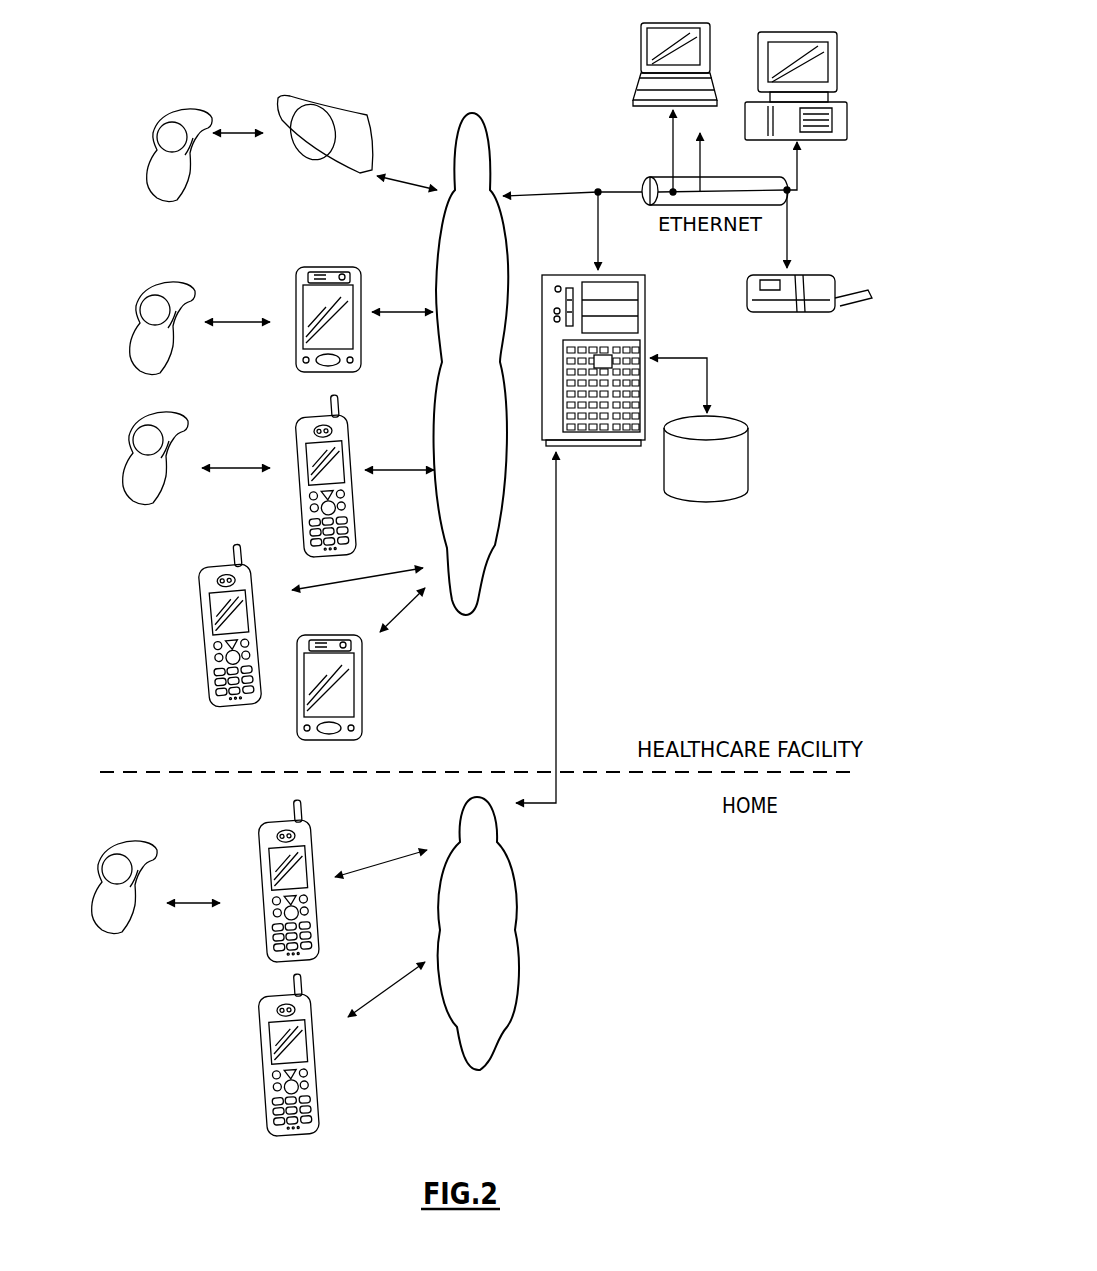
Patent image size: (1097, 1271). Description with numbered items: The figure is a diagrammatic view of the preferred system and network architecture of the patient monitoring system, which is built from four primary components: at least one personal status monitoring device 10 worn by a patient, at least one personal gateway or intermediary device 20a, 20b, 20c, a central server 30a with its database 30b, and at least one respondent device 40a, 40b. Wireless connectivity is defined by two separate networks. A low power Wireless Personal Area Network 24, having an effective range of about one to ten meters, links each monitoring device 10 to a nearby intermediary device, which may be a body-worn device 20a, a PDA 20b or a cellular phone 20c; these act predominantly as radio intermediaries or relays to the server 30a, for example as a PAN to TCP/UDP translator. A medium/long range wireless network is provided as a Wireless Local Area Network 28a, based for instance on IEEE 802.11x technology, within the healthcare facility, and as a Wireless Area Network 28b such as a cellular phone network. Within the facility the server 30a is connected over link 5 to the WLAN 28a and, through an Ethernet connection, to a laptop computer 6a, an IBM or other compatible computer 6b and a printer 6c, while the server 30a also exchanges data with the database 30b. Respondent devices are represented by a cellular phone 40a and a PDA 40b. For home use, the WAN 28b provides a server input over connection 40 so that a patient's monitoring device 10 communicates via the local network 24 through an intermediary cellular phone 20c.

The network connection between WLAN and server 5 is at (520, 194).
The laptop computer 6a is at (638, 60).
The compatible computer 6b is at (837, 72).
The printer 6c is at (835, 285).
The personal status monitoring device 10 is at (153, 193).
The body-worn device 20a is at (325, 112).
The PDA 20b is at (317, 267).
The cellular phone 20c is at (300, 427).
The Wireless Personal Area Network 24 is at (237, 135).
The Wireless Local Area Network 28a is at (489, 240).
The Wireless Area Network 28b is at (496, 869).
The central server 30a is at (647, 293).
The database 30b is at (730, 423).
The network connection between server and WAN 40 is at (557, 625).
The cellular phone 40a is at (218, 708).
The PDA 40b is at (298, 722).